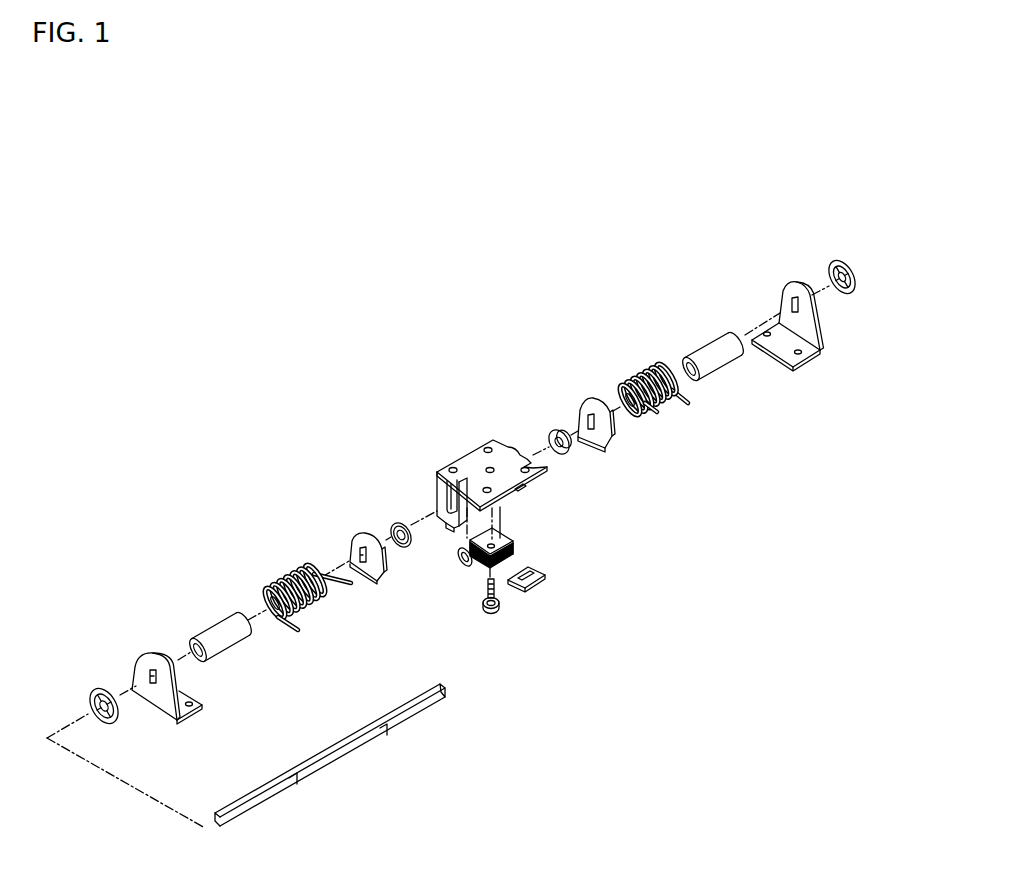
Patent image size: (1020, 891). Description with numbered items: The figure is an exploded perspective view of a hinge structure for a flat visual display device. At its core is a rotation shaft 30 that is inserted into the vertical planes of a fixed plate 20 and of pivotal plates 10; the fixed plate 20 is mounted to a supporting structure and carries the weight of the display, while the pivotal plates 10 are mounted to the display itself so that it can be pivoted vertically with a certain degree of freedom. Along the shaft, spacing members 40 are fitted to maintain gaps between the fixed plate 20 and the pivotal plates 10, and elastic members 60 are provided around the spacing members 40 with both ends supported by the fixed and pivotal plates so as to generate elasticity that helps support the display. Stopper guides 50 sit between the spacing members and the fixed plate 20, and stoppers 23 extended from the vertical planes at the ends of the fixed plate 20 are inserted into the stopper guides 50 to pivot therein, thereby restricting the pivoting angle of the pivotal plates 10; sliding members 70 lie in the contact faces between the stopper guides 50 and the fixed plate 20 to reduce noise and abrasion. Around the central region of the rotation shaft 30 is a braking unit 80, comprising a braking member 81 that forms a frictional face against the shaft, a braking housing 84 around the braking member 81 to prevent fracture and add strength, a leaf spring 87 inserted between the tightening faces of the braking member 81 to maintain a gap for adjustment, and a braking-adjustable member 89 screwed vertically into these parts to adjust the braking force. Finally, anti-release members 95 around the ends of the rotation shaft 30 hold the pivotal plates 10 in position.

The pivotal plate 10 is at (143, 664).
The fixed plate 20 is at (470, 460).
The stopper 23 is at (436, 515).
The rotation shaft 30 is at (360, 738).
The spacing member 40 is at (222, 645).
The stopper guide 50 is at (363, 533).
The elastic member 60 is at (290, 578).
The sliding member 70 is at (398, 523).
The braking unit 80 is at (548, 563).
The braking member 81 is at (510, 552).
The braking housing 84 is at (492, 546).
The leaf spring 87 is at (543, 570).
The braking-adjustable member 89 is at (540, 599).
The anti-release member 95 is at (92, 689).